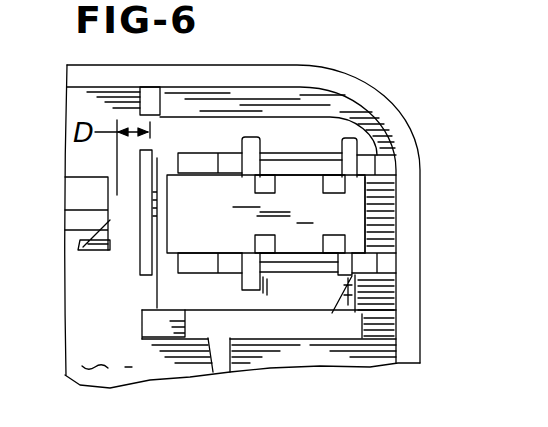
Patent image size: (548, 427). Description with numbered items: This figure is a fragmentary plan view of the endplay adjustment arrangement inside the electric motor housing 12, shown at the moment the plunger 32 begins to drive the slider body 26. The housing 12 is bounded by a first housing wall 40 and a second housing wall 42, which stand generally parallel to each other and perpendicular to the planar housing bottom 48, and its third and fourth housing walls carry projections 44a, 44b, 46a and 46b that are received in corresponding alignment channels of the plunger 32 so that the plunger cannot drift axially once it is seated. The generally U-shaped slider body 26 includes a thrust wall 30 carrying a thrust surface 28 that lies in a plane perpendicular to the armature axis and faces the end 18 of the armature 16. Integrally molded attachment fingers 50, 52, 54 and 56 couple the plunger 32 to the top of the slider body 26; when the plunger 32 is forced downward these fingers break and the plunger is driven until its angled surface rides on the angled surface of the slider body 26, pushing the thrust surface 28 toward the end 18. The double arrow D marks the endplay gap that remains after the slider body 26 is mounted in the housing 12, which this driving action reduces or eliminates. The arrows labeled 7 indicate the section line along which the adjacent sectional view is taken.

The section line 7- 7 is at (25, 212).
The housing 12 is at (78, 70).
The armature 16 is at (65, 226).
The end 18 is at (68, 252).
The slider body 26 is at (212, 117).
The thrust surface 28 is at (140, 250).
The thrust wall 30 is at (161, 153).
The plunger 32 is at (300, 164).
The first housing wall 40 is at (280, 97).
The second housing wall 42 is at (372, 330).
The projection 44a is at (256, 182).
The projection 44b is at (341, 180).
The projection 46a is at (256, 240).
The projection 46b is at (326, 250).
The housing bottom 48 is at (106, 351).
The attachment finger 50 is at (269, 336).
The attachment finger 52 is at (250, 288).
The attachment finger 54 is at (250, 137).
The attachment finger 56 is at (352, 145).